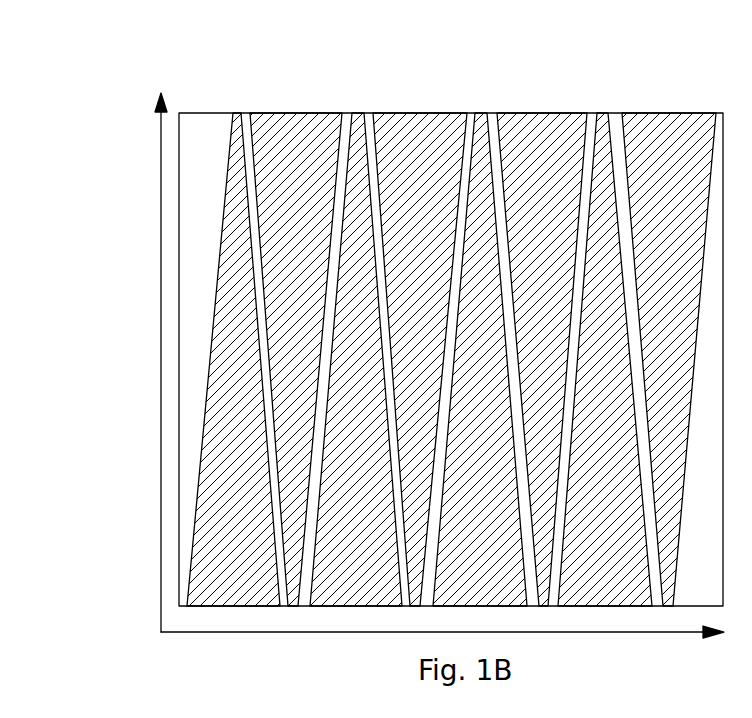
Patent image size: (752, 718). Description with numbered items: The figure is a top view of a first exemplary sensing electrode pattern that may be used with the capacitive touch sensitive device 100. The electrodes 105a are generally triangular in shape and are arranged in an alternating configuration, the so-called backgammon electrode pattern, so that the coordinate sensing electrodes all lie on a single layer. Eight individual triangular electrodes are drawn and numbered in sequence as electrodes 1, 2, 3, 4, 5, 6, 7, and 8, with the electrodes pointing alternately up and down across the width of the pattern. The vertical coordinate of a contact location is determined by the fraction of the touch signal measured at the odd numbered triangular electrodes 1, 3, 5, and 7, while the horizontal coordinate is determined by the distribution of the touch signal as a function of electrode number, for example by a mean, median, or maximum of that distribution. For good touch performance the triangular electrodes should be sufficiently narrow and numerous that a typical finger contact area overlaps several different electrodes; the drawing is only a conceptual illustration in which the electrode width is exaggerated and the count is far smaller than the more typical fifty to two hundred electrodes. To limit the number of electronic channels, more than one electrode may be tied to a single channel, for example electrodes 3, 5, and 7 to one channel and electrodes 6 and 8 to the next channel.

The capacitive touch sensitive device 100 is at (108, 90).
The electrodes 105a is at (197, 113).
The triangular electrode 1 is at (233, 359).
The triangular electrode 2 is at (296, 359).
The triangular electrode 3 is at (356, 359).
The triangular electrode 4 is at (420, 359).
The triangular electrode 5 is at (480, 359).
The triangular electrode 6 is at (542, 359).
The triangular electrode 7 is at (605, 359).
The triangular electrode 8 is at (669, 359).